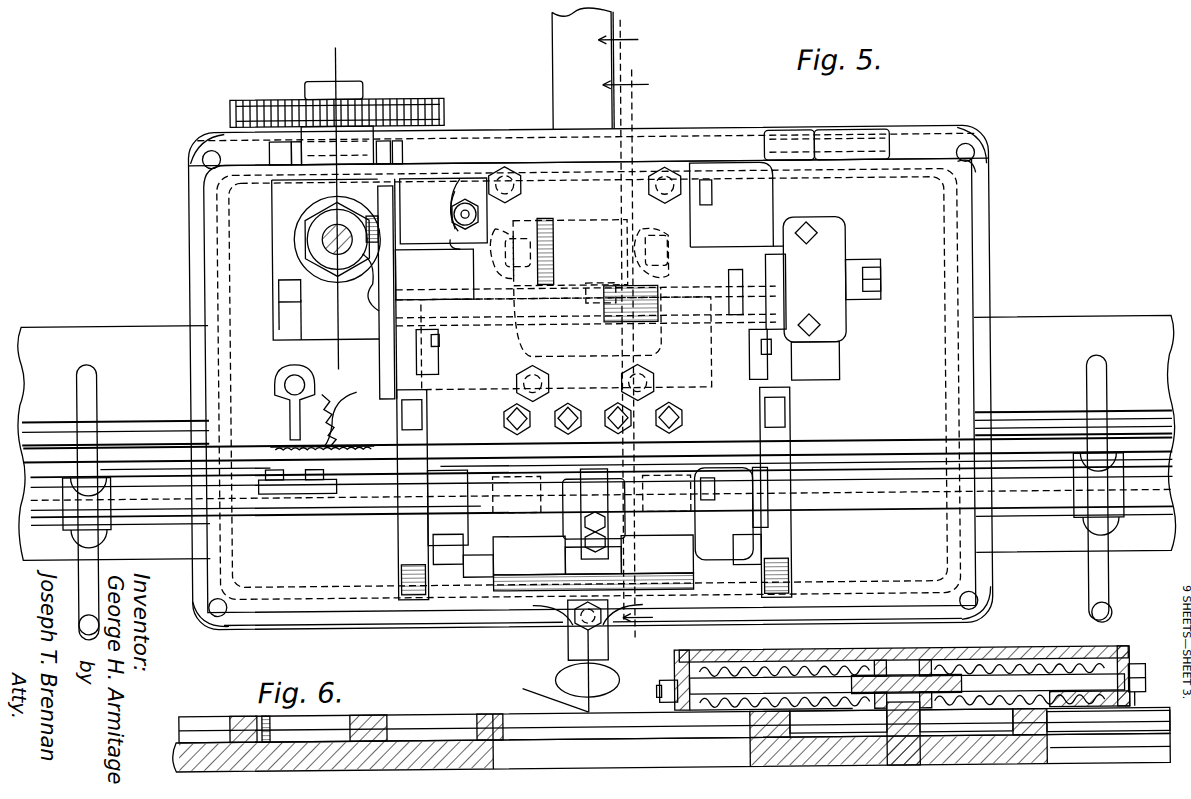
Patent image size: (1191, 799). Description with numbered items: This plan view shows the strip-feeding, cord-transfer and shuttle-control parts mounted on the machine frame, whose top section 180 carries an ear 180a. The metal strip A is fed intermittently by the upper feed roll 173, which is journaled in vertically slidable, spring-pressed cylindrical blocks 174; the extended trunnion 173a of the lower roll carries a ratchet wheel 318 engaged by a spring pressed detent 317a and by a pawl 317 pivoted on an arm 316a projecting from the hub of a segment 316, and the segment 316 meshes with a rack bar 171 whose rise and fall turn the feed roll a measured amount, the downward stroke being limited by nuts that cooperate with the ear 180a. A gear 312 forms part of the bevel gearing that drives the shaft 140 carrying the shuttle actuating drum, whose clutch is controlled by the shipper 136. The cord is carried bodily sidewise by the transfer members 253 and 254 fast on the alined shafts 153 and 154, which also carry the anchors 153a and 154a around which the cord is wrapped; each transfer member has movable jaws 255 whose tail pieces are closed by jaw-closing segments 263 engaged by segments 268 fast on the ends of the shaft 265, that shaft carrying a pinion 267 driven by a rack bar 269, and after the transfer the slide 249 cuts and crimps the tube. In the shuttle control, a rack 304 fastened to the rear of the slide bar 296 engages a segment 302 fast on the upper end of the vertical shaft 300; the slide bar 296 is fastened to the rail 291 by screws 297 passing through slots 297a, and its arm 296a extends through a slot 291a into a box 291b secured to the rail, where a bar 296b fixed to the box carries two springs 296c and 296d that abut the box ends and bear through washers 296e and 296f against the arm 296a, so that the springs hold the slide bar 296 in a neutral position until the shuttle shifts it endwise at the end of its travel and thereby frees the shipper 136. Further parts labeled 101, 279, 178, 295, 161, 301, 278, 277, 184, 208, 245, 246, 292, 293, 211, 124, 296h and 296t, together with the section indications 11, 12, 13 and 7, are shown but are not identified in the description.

In FIG. 5, the housing 101 is at (975, 200).
In FIG. 5, the housing cover flange 279 is at (990, 170).
In FIG. 5, the top section of the frame 180 is at (672, 162).
In FIG. 5, the ear 180a is at (464, 176).
In FIG. 5, the metal strip A is at (583, 69).
In FIG. 5, the section line 11 is at (528, 690).
In FIG. 5, the section line 12 is at (640, 359).
In FIG. 5, the gear 312 is at (447, 104).
In FIG. 5, the shaft / section line 13 is at (334, 200).
In FIG. 5, the pawl 317 is at (374, 185).
In FIG. 5, the ratchet wheel 318 is at (326, 259).
In FIG. 5, the shaft 140 is at (324, 247).
In FIG. 5, the spring pressed detent 317a is at (341, 283).
In FIG. 5, the shipper 136 is at (324, 319).
In FIG. 5, the segment 316 is at (457, 236).
In FIG. 5, the arm 316a is at (397, 176).
In FIG. 5, the rack bar 171 is at (462, 178).
In FIG. 5, the trunnion 173a is at (510, 216).
In FIG. 5, the nut 178 is at (557, 213).
In FIG. 5, the upper feed roll 173 is at (581, 240).
In FIG. 5, the cylindrical blocks 174 is at (522, 233).
In FIG. 5, the segments 268 is at (774, 269).
In FIG. 5, the shaft 265 is at (588, 321).
In FIG. 5, the pinion 267 is at (566, 343).
In FIG. 5, the rack bar 269 is at (622, 319).
In FIG. 5, the gear casing 295 is at (815, 299).
In FIG. 5, the bolt 161 is at (852, 307).
In FIG. 5, the jaw-closing segments 263 is at (427, 358).
In FIG. 5, the movable jaws 255 is at (427, 413).
In FIG. 5, the transfer member 254 is at (397, 547).
In FIG. 5, the transfer member 253 is at (792, 549).
In FIG. 5, the vertical shaft 300 is at (290, 367).
In FIG. 5, the block 301 is at (275, 465).
In FIG. 5, the segment 302 is at (354, 414).
In FIG. 5, the rack 304 is at (322, 449).
In FIG. 5, the shaft 153 is at (598, 477).
In FIG. 5, the shaft 154 is at (256, 497).
In FIG. 5, the left support 278 is at (113, 443).
In FIG. 5, the right support 277 is at (1075, 433).
In FIG. 5, the anchor 154a is at (97, 394).
In FIG. 5, the rail 291 is at (1040, 442).
In FIG. 6, the rail 291 is at (508, 713).
In FIG. 5, the anchor 153a is at (1110, 589).
In FIG. 5, the slide bar 296 is at (1010, 478).
In FIG. 6, the slide bar 296 is at (672, 752).
In FIG. 5, the block 184 is at (557, 469).
In FIG. 5, the bolt 208 is at (593, 514).
In FIG. 5, the block 245 is at (593, 563).
In FIG. 5, the slide 249 is at (593, 561).
In FIG. 5, the block 246 is at (657, 524).
In FIG. 5, the block 292 is at (723, 513).
In FIG. 5, the block 293 is at (467, 554).
In FIG. 5, the bracket 211 is at (467, 574).
In FIG. 5, the bolt 124 is at (593, 655).
In FIG. 5, the section line 7 is at (575, 696).
In FIG. 6, the screws 297 is at (448, 688).
In FIG. 6, the slots 297a is at (453, 710).
In FIG. 6, the slot 291a is at (838, 722).
In FIG. 6, the arm 296a is at (966, 721).
In FIG. 6, the bolt or bar 296b is at (1023, 651).
In FIG. 6, the spring 296c is at (808, 677).
In FIG. 6, the washer 296e is at (878, 663).
In FIG. 6, the washer 296f is at (938, 651).
In FIG. 6, the flange 296h is at (670, 669).
In FIG. 6, the spring 296d is at (1098, 666).
In FIG. 6, the box or frame 291b is at (1056, 651).
In FIG. 6, the end piece 296t is at (1143, 669).